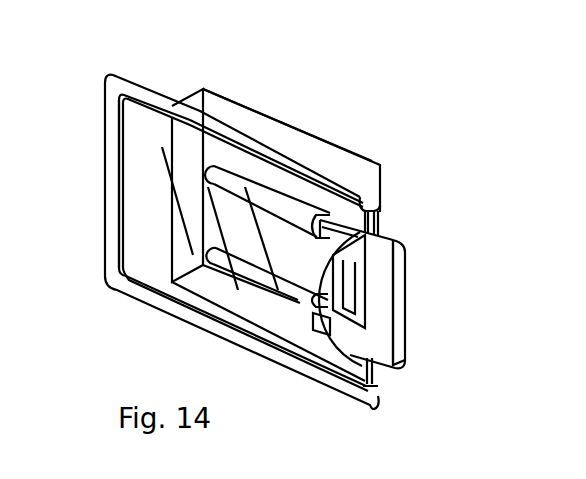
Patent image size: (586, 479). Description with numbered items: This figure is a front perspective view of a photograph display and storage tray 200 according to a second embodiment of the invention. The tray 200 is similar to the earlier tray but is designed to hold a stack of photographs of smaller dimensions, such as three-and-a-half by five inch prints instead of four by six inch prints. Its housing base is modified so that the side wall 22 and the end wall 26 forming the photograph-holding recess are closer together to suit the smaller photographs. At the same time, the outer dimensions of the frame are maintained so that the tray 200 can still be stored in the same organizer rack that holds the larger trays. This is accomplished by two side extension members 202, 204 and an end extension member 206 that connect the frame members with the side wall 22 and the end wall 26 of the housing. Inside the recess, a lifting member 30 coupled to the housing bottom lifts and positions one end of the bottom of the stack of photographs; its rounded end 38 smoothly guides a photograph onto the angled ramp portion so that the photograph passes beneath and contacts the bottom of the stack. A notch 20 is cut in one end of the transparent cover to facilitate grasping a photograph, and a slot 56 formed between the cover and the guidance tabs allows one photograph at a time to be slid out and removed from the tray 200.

The photograph display and storage tray 200 is at (386, 110).
The side wall 22 is at (300, 145).
The side extension member 202 is at (240, 122).
The end wall 26 is at (188, 144).
The side extension member 204 is at (212, 286).
The end extension member 206 is at (140, 177).
The notch 20 is at (376, 236).
The rounded end 38 is at (397, 318).
The lifting member 30 is at (374, 272).
The slot 56 is at (380, 395).